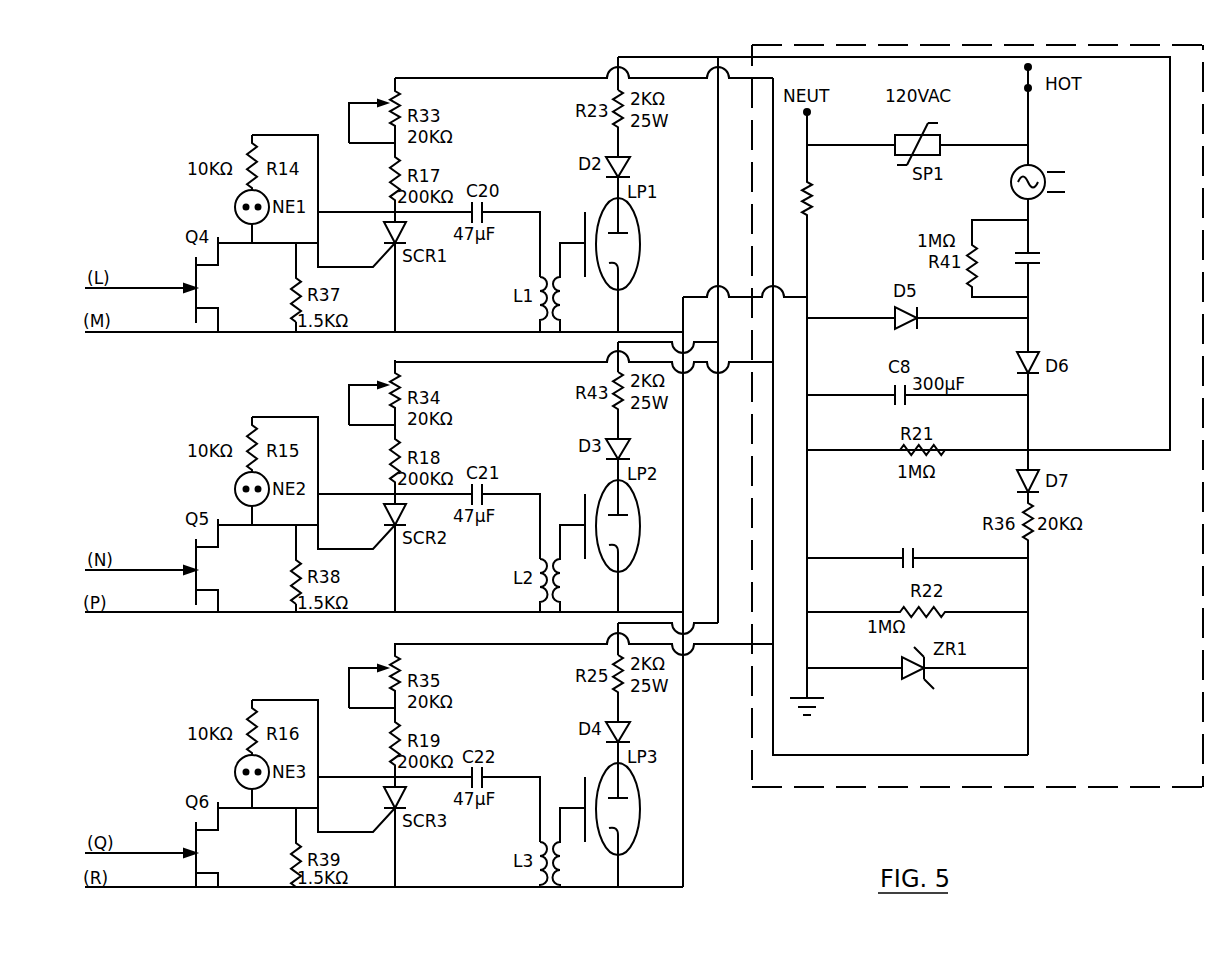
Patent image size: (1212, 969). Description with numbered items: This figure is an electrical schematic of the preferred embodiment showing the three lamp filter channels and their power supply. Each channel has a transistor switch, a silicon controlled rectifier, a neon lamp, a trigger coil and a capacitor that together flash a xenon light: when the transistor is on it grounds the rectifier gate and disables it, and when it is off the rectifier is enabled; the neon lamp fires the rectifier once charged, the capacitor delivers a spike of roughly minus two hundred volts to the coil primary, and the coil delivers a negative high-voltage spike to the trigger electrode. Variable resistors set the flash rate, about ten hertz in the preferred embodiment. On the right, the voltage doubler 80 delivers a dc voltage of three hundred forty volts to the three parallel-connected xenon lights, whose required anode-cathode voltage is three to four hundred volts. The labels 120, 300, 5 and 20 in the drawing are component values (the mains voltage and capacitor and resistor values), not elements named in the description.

The voltage doubler 80 is at (1090, 787).
The 120 VAC source 120 is at (1073, 182).
The capacitor C23 (300 uF) 300 is at (1054, 270).
The resistor R20 (5 ohm) 5 is at (829, 405).
The capacitor C9 (20 uF) 20 is at (917, 543).